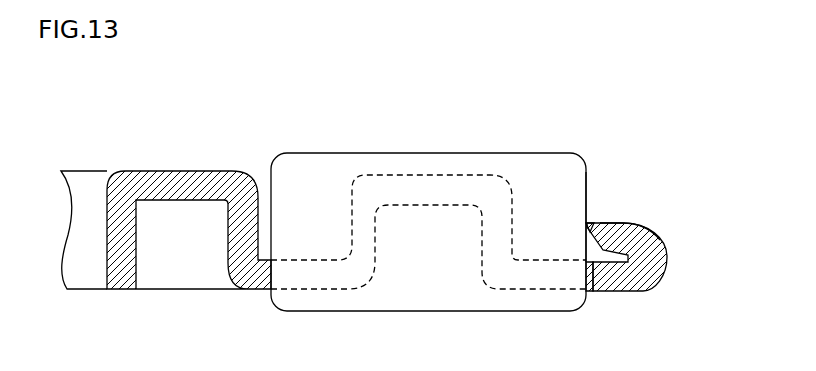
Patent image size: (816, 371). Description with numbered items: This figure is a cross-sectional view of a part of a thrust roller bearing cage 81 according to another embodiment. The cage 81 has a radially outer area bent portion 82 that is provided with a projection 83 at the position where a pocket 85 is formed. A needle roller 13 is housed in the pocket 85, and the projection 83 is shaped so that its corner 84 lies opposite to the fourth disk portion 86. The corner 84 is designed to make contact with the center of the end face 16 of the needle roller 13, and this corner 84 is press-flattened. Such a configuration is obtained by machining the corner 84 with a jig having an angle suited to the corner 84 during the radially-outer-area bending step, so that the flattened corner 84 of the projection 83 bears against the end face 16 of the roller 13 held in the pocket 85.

The needle roller 13 is at (530, 172).
The end face 16 is at (587, 183).
The thrust roller bearing cage 81 is at (583, 111).
The radially outer area bent portion 82 is at (628, 236).
The projection 83 is at (622, 230).
The corner 84 is at (589, 225).
The pocket 85 is at (250, 160).
The fourth disk portion 86 is at (608, 280).